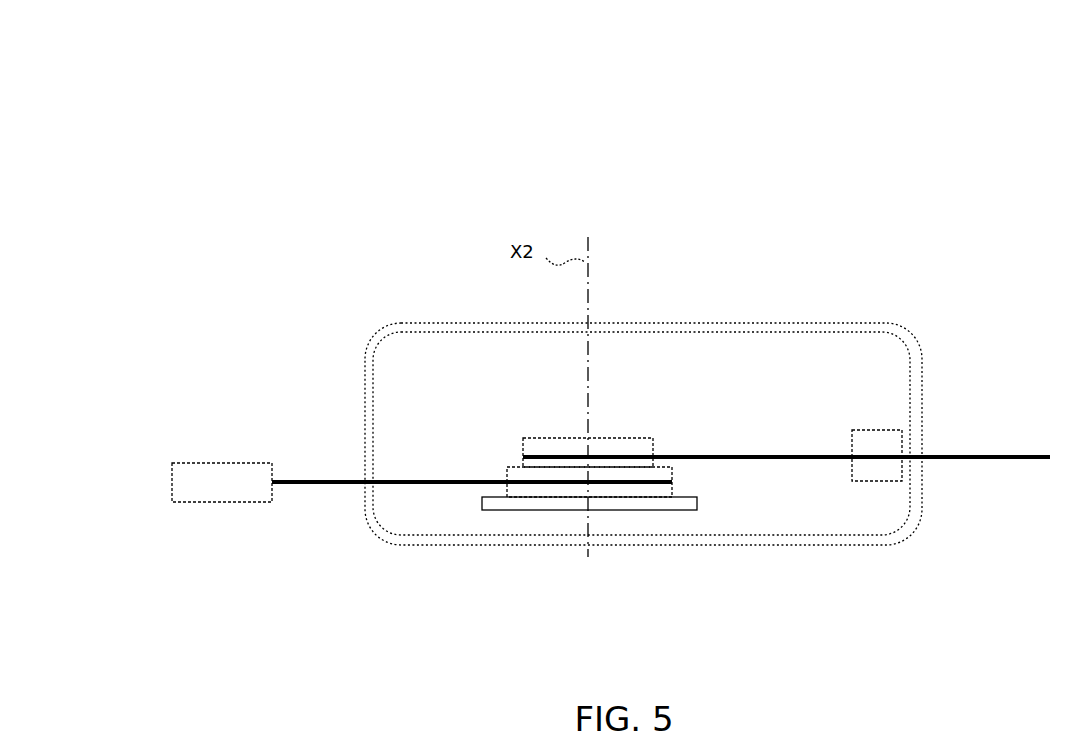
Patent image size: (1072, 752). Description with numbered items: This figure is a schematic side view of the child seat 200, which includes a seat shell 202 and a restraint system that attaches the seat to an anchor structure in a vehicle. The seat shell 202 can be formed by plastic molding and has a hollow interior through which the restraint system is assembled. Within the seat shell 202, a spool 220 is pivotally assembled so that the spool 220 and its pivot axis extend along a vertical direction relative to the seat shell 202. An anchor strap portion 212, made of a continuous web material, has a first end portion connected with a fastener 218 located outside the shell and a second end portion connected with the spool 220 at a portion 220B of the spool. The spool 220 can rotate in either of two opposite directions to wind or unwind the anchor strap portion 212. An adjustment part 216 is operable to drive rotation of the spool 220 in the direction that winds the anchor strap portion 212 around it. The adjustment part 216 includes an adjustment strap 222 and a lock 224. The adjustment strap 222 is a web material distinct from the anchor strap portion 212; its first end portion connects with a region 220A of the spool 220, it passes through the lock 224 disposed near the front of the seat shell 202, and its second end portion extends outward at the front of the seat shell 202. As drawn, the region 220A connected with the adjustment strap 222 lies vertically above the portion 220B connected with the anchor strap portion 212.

The child seat 200 is at (63, 58).
The seat shell 202 is at (470, 540).
The anchor strap portion 212 is at (307, 480).
The adjustment part 216 is at (945, 507).
The fastener 218 is at (220, 478).
The spool 220 is at (540, 438).
The region of the spool 220A is at (637, 438).
The portion of the spool 220B is at (645, 490).
The adjustment strap 222 is at (983, 450).
The lock 224 is at (882, 482).